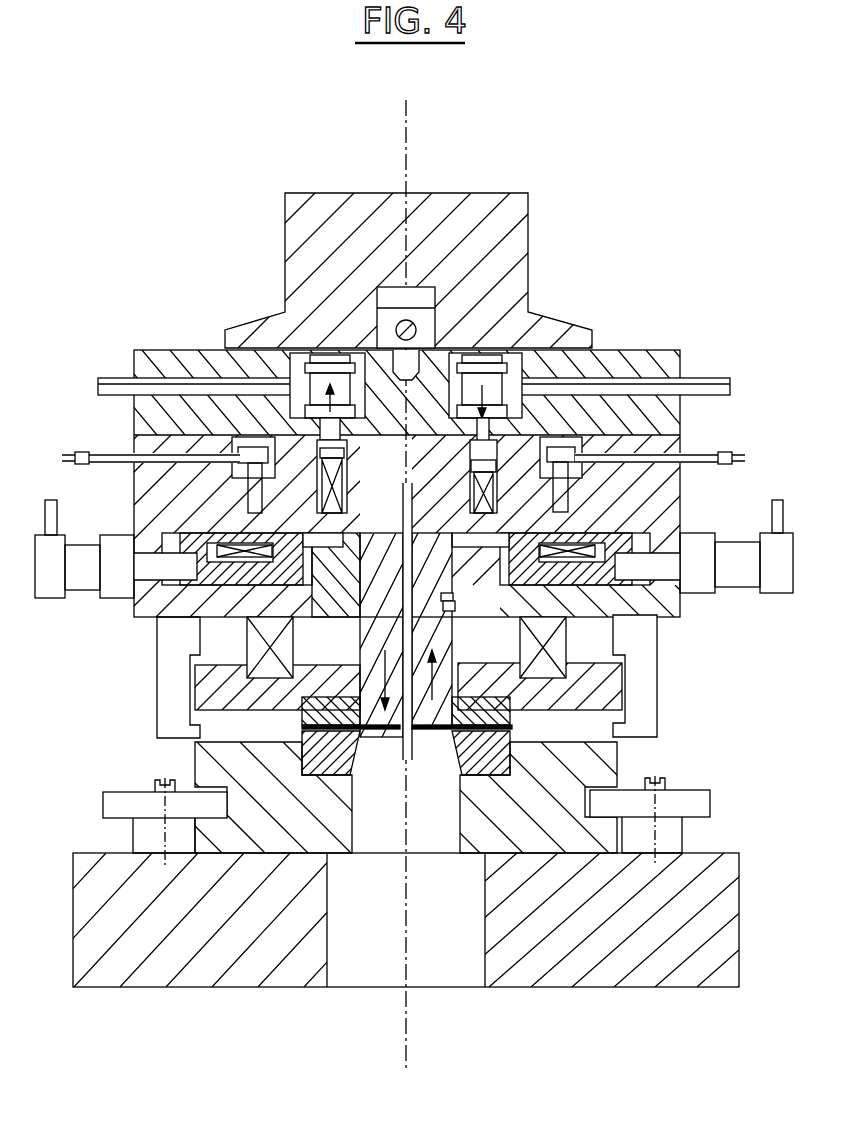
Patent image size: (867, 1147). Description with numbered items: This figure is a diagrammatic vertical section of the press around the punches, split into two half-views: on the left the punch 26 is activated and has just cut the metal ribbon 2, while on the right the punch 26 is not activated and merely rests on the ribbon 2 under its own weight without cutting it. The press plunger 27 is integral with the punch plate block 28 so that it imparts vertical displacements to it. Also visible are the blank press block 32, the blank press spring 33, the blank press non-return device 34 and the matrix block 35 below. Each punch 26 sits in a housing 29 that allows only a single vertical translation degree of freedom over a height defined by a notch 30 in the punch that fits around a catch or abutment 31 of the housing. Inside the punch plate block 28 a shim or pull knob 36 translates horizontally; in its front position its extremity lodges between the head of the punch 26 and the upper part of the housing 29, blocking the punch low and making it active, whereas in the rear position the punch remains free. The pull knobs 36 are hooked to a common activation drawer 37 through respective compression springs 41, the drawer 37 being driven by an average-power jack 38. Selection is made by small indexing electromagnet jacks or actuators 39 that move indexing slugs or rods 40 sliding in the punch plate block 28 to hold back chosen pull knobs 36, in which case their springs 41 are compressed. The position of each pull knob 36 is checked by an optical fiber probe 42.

The metal ribbon 2 is at (345, 762).
The punch 26 is at (360, 646).
The press plunger 27 is at (320, 215).
The punch plate block 28 is at (680, 492).
The housing 29 is at (466, 592).
The notch 30 is at (451, 603).
The catch or abutment 31 is at (367, 609).
The blank press block 32 is at (213, 697).
The blank press spring 33 is at (247, 641).
The blank press non-return device 34 is at (165, 735).
The matrix block 35 is at (640, 762).
The shim or pull knob 36 is at (517, 532).
The activation drawer 37 is at (620, 580).
The jack 38 is at (63, 592).
The indexing electromagnet jack or actuator 39 is at (497, 355).
The indexing slug or rod 40 is at (470, 468).
The compression spring 41 is at (583, 532).
The optical fiber probe 42 is at (245, 497).